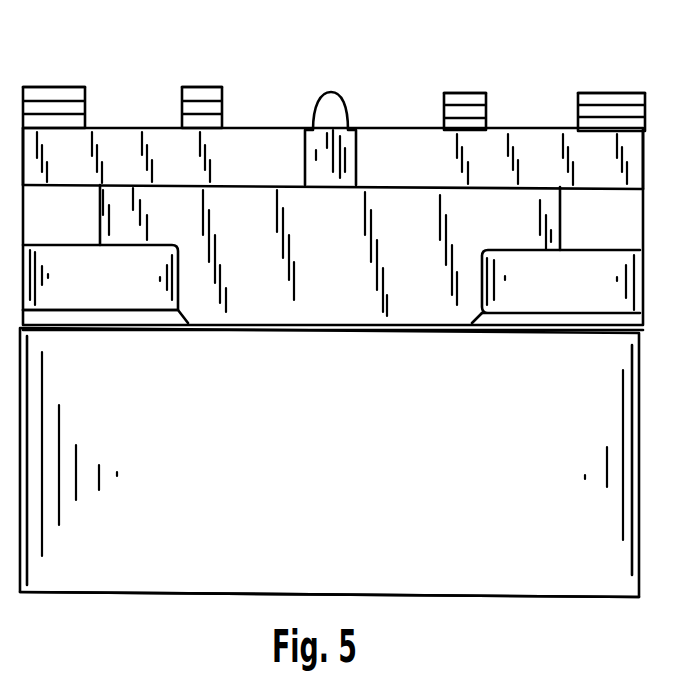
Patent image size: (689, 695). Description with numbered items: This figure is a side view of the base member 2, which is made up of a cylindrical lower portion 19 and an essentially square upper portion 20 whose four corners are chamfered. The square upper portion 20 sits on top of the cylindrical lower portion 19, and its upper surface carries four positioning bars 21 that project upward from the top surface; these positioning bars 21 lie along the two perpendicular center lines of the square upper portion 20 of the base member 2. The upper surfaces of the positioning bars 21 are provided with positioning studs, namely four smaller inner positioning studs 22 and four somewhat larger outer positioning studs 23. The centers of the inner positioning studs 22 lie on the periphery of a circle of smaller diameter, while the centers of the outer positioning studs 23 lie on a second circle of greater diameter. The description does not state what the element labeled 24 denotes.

The base member 2 is at (168, 580).
The cylindrical lower portion 19 is at (517, 567).
The square upper portion 20 is at (405, 205).
The positioning bars 21 is at (305, 152).
The inner positioning studs 22 is at (222, 105).
The outer positioning studs 23 is at (86, 107).
The top metallization layer 24 is at (193, 87).